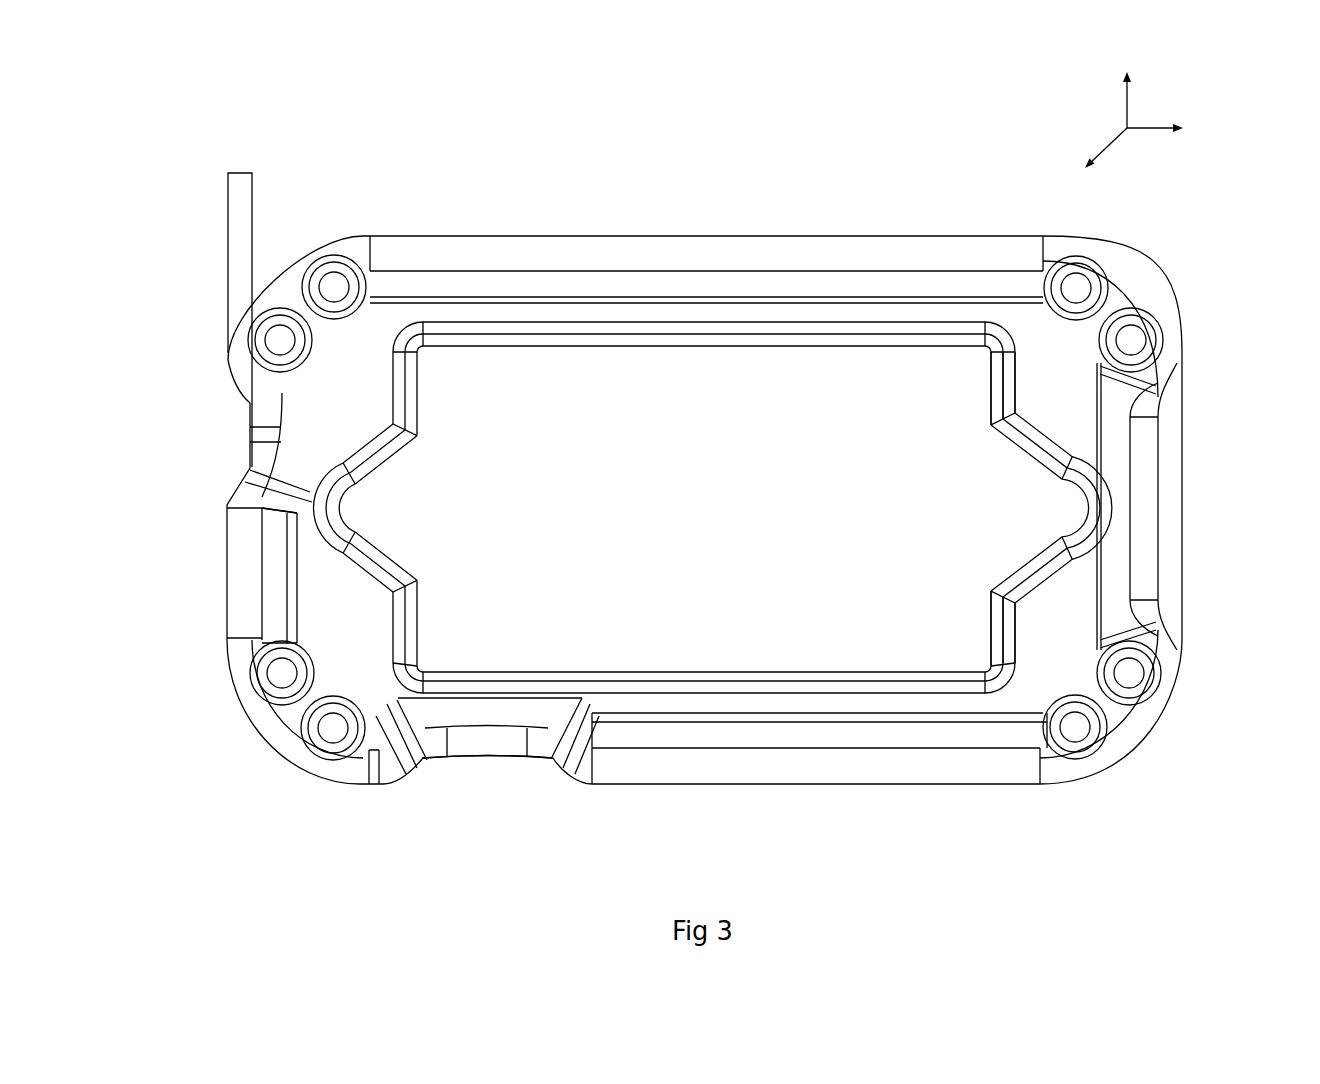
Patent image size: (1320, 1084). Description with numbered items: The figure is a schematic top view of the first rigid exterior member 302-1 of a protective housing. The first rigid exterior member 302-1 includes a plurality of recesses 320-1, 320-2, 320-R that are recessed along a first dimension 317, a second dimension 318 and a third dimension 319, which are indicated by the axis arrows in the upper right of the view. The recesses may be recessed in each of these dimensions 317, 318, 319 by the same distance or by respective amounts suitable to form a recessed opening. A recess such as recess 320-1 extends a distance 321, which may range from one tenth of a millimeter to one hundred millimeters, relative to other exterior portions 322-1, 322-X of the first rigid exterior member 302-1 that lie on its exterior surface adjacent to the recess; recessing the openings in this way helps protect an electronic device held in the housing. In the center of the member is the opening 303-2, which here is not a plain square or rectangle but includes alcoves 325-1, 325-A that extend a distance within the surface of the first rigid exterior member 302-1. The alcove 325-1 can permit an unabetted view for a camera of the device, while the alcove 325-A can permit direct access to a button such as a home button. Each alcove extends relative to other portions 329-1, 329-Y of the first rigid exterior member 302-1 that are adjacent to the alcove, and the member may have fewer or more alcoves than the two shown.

The first rigid exterior member 302-1 is at (185, 186).
The distance 321 is at (239, 173).
The opening 303-2 is at (729, 518).
The alcove 325-1 is at (387, 500).
The alcove 325-A is at (1045, 492).
The other portion of the first REM 329-1 is at (1000, 421).
The other portion of the first REM 329-Y is at (997, 598).
The recess 320-1 is at (245, 437).
The exterior portion 322-1 is at (228, 358).
The exterior portion 322-X is at (247, 453).
The recess 320-R is at (1173, 497).
The recess 320-2 is at (485, 767).
The second dimension 318 is at (1125, 88).
The first dimension 317 is at (1175, 128).
The third dimension 319 is at (1092, 160).